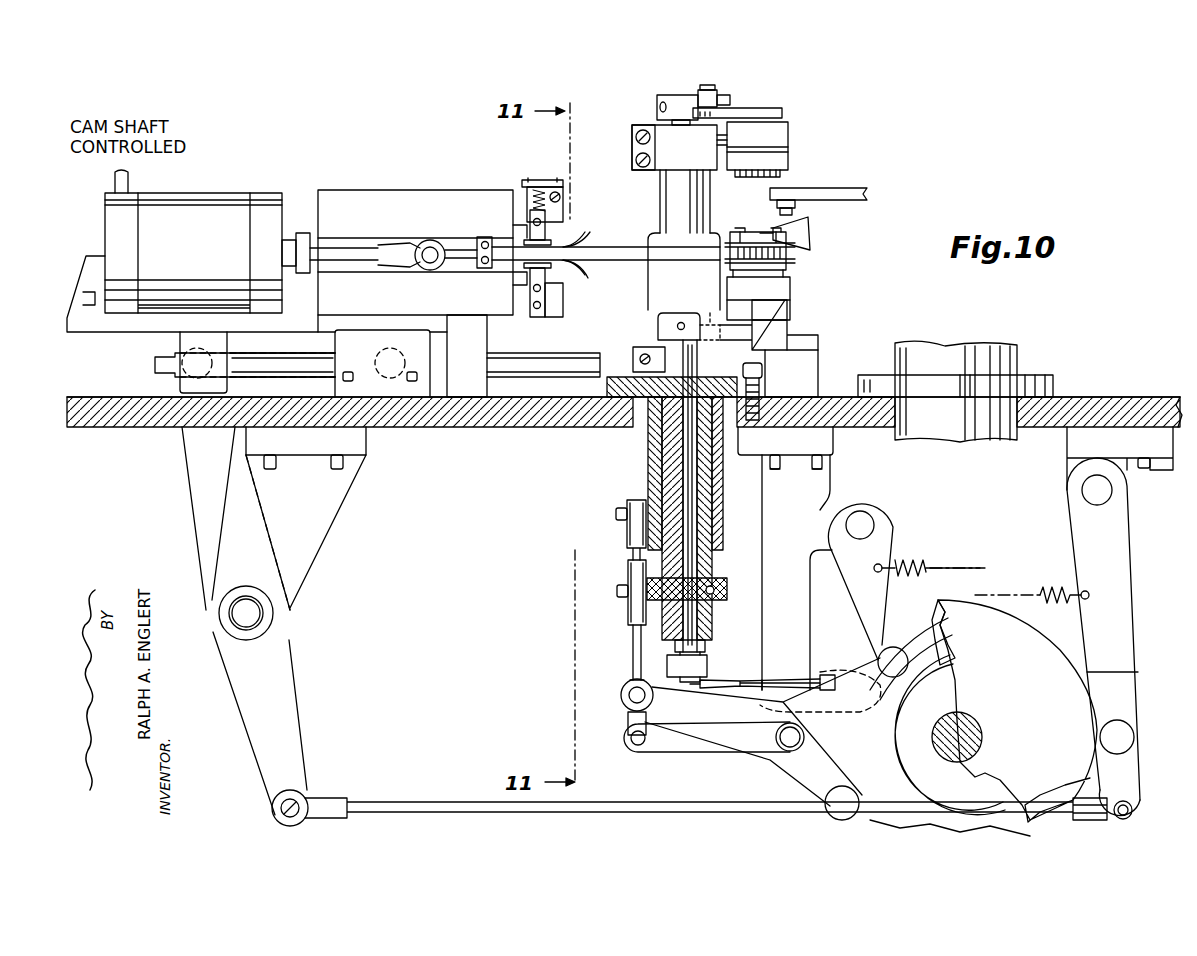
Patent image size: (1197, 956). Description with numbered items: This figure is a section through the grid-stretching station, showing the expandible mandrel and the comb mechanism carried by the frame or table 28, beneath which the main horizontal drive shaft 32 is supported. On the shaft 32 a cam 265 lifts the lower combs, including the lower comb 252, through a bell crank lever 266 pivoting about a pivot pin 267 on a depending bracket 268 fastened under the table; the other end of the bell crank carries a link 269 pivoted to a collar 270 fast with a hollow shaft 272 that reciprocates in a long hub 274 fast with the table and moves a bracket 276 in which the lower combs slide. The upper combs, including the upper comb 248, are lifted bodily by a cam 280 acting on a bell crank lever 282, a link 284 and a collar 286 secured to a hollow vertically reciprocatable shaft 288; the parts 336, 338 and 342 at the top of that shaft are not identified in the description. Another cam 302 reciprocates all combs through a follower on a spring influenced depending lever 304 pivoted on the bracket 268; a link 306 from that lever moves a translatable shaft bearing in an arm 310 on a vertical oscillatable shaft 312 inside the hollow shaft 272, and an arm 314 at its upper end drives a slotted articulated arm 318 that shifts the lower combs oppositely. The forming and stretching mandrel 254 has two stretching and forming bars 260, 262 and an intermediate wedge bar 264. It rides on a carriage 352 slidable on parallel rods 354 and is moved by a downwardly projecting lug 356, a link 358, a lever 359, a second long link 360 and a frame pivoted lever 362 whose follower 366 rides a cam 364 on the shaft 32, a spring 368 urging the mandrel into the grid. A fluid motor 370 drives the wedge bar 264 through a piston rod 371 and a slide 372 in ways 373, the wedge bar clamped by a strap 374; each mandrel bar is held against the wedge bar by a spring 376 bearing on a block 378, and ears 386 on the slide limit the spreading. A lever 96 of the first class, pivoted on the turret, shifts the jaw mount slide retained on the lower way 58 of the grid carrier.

The table 28 is at (478, 427).
The main horizontal drive shaft 32 is at (983, 737).
The lower way 58 is at (811, 234).
The lever of the first class 96 is at (836, 188).
The upper comb 248 is at (763, 180).
The lower comb 252 is at (790, 279).
The forming and stretching mandrel 254 is at (632, 224).
The stretching and forming bar 260 is at (568, 268).
The stretching and forming bar 262 is at (582, 246).
The intermediate wedge bar 264 is at (609, 262).
The cam 265 is at (983, 718).
The bell crank lever 266 is at (763, 739).
The pivot pin 267 is at (786, 752).
The depending bracket 268 is at (785, 558).
The link 269 is at (630, 643).
The collar 270 is at (727, 580).
The hollow shaft 272 is at (712, 640).
The long hub 274 is at (633, 440).
The bracket 276 is at (633, 358).
The cam 280 is at (893, 648).
The bell crank lever 282 is at (694, 752).
The link 284 is at (628, 558).
The collar 286 is at (628, 502).
The hollow vertically reciprocatable shaft 288 is at (660, 175).
The cam 302 is at (935, 622).
The spring influenced depending lever 304 is at (891, 546).
The link 306 is at (780, 678).
The arm 310 is at (708, 672).
The vertical oscillatable shaft 312 is at (650, 470).
The arm 314 is at (693, 313).
The articulated arm 318 is at (786, 345).
The block 336 is at (655, 100).
The nut 338 is at (717, 92).
The plate 342 is at (782, 113).
The carriage 352 is at (487, 345).
The parallel rods 354 is at (541, 353).
The downwardly projecting lug 356 is at (392, 330).
The link 358 is at (330, 348).
The lever 359 is at (190, 528).
The second long link 360 is at (638, 800).
The frame pivoted lever 362 is at (1128, 555).
The cam 364 is at (1138, 672).
The follower 366 is at (1130, 722).
The spring 368 is at (1050, 592).
The fluid motor 370 is at (200, 193).
The piston rod 371 is at (352, 246).
The slide 372 is at (446, 248).
The ways 373 is at (372, 245).
The strap 374 is at (485, 236).
The spring 376 is at (536, 188).
The block 378 is at (548, 214).
The ears 386 is at (528, 285).